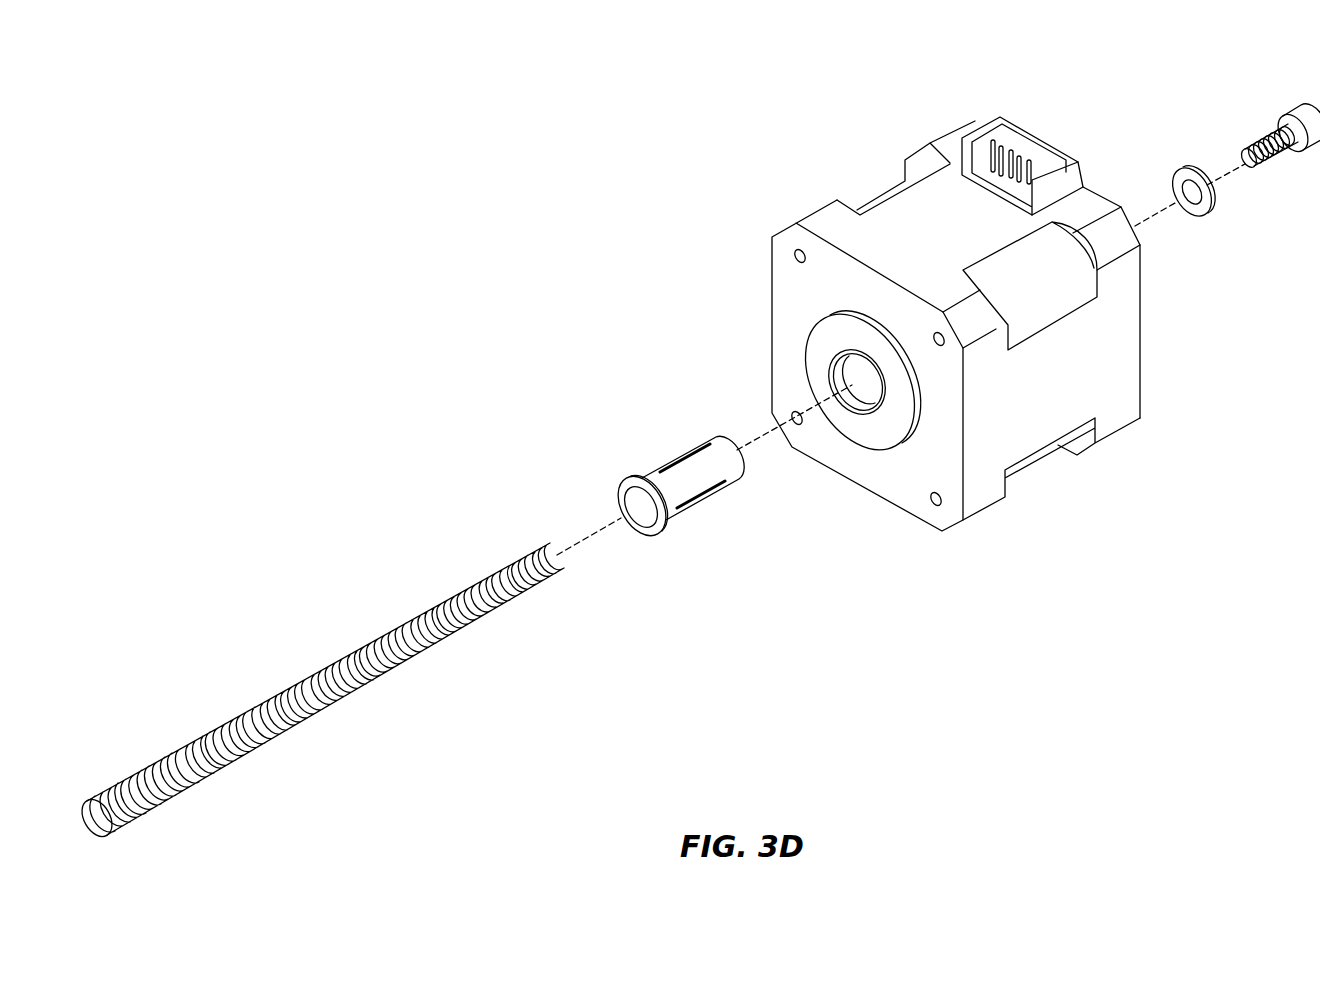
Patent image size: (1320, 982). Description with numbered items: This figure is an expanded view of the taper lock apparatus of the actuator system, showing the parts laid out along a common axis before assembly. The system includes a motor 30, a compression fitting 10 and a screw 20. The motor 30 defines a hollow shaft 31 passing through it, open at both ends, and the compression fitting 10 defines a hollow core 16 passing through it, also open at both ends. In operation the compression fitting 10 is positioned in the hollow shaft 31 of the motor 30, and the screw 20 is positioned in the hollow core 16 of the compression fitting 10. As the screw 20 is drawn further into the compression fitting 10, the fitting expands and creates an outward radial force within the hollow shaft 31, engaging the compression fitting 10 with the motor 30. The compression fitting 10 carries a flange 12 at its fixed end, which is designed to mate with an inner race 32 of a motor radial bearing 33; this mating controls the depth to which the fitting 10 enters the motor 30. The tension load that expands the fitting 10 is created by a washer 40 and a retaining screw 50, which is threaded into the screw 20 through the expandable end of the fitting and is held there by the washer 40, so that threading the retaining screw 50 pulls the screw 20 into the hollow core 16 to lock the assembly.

The compression fitting 10 is at (651, 483).
The flange 12 is at (667, 523).
The hollow core 16 is at (634, 500).
The screw 20 is at (255, 700).
The motor 30 is at (922, 325).
The hollow shaft 31 is at (870, 385).
The inner race 32 is at (840, 373).
The motor radial bearing 33 is at (875, 430).
The washer 40 is at (1180, 170).
The retaining screw 50 is at (1292, 112).